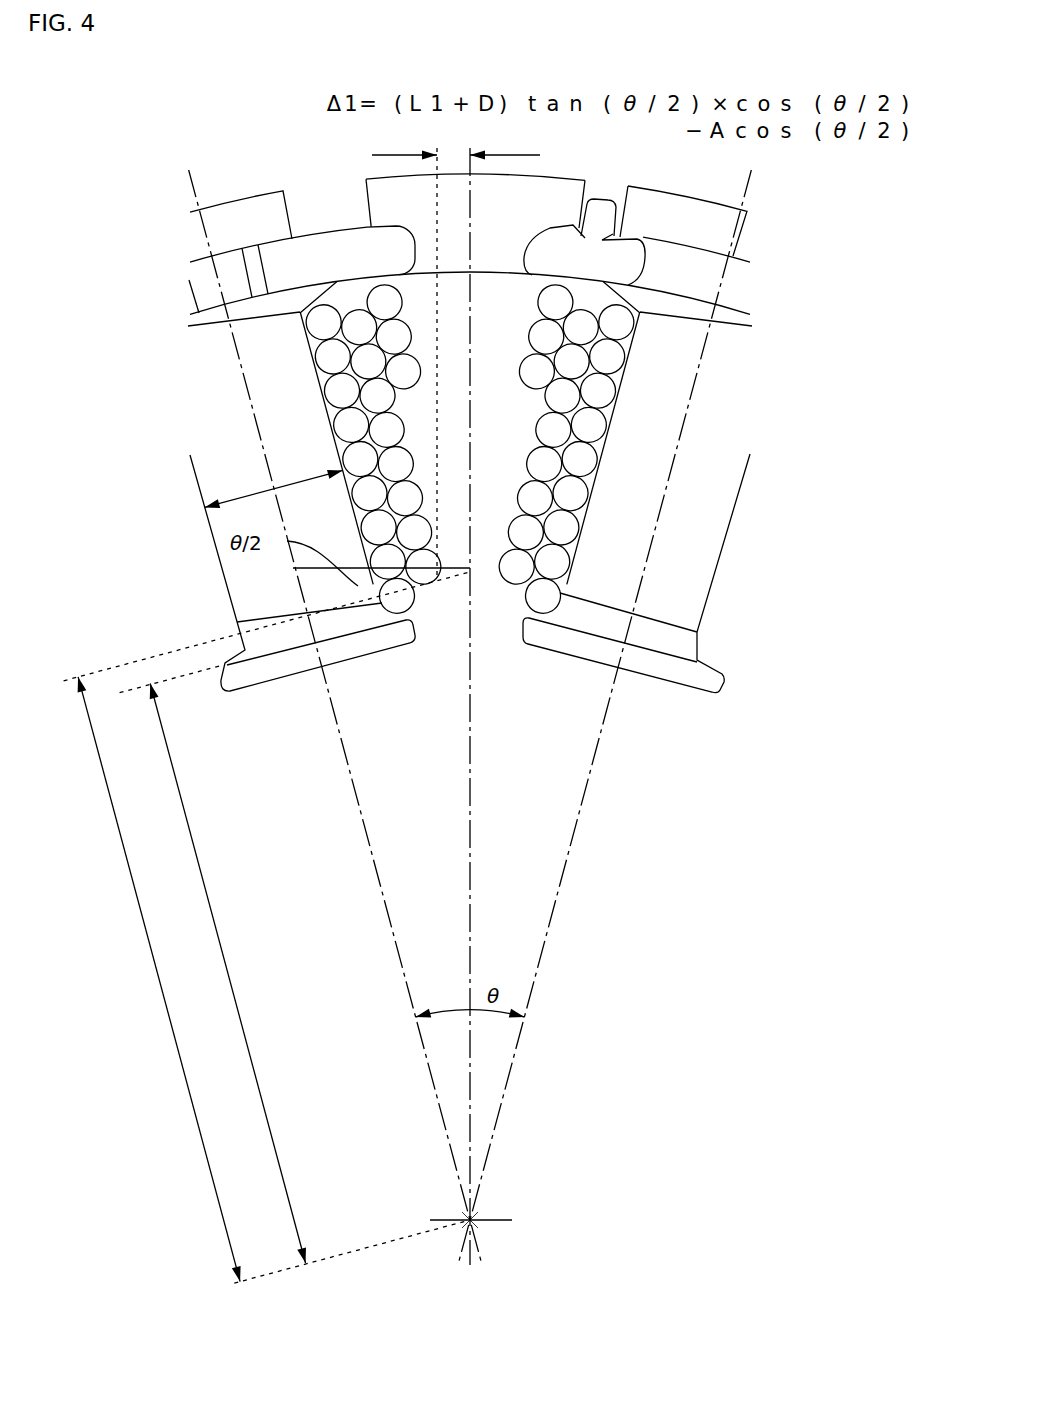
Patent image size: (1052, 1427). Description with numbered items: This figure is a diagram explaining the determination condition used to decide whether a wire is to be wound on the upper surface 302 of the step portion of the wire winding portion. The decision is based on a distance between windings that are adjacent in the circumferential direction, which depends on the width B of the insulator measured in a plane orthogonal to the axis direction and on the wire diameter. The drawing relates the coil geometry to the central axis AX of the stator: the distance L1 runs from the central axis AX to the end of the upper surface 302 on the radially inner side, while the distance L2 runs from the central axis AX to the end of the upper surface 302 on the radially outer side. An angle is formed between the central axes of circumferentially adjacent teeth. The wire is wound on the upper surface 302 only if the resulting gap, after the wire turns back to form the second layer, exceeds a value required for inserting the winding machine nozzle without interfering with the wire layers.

The upper surface of the step portion 302 is at (278, 637).
The central axis of the stator AX is at (480, 1218).
The width of the insulator B is at (273, 483).
The distance to the inner end of the upper surface L1 is at (228, 973).
The distance to the outer end of the upper surface L2 is at (159, 979).